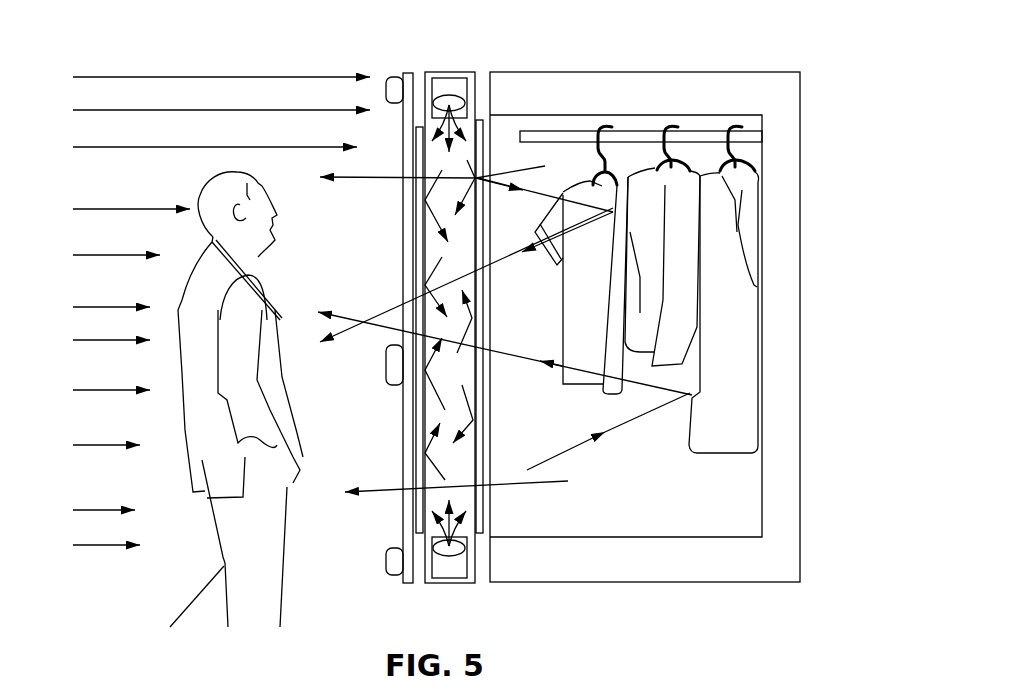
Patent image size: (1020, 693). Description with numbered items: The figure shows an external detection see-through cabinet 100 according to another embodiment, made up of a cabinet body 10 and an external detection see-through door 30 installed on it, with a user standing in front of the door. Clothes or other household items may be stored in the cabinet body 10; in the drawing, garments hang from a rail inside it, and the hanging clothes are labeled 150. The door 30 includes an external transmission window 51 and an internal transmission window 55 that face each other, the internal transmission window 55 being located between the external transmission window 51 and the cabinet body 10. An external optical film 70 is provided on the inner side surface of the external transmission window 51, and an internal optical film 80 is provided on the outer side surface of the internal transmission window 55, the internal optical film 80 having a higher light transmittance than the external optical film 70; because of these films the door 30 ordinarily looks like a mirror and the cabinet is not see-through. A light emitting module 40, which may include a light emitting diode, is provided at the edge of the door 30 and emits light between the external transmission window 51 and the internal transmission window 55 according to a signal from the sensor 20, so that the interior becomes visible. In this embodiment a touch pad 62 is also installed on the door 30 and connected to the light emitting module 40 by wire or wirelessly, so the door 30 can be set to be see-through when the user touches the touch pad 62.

The cabinet body 10 is at (730, 70).
The sensor 20 is at (395, 77).
The external detection see-through door 30 is at (390, 461).
The light emitting module 40 is at (449, 98).
The external transmission window 51 is at (410, 262).
The internal transmission window 55 is at (492, 432).
The touch pad 62 is at (393, 388).
The external optical film 70 is at (415, 213).
The internal optical film 80 is at (482, 292).
The external detection see-through cabinet 100 is at (652, 50).
The clothes 150 is at (690, 410).